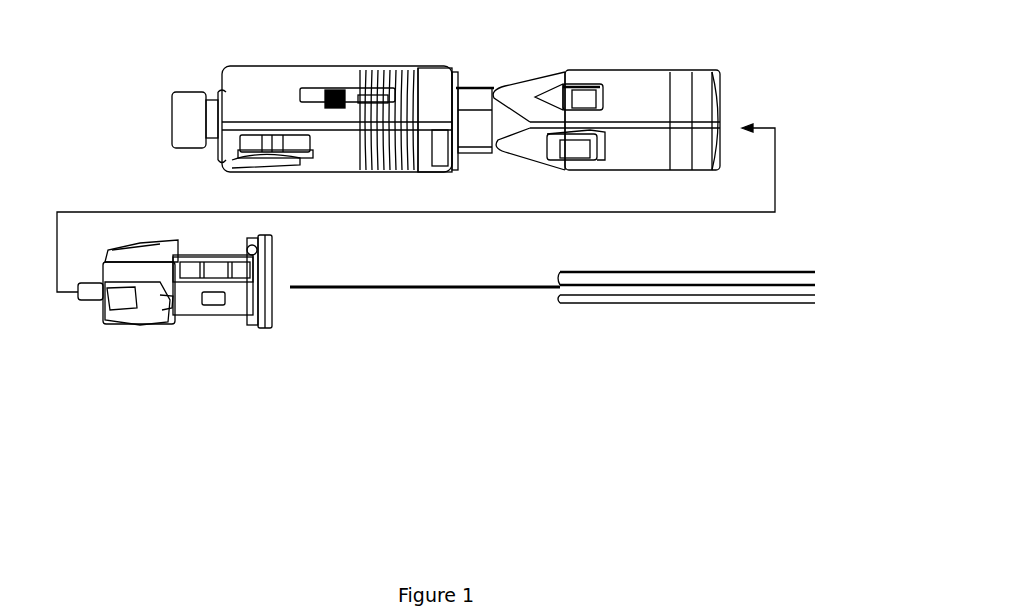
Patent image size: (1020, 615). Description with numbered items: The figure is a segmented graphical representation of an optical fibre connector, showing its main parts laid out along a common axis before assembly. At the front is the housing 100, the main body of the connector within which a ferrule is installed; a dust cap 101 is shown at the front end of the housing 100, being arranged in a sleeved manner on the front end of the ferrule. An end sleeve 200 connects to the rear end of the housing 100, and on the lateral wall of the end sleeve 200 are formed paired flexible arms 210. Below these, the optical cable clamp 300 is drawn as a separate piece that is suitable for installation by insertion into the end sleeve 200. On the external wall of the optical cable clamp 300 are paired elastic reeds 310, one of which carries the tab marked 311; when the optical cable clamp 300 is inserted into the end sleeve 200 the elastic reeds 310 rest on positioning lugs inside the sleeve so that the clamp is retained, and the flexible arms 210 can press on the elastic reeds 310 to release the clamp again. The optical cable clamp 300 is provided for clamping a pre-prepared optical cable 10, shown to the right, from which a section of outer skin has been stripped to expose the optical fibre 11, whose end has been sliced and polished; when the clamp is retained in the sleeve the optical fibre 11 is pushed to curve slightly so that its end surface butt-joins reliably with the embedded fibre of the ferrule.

The housing 100 is at (317, 82).
The dust cap 101 is at (187, 95).
The end sleeve 200 is at (637, 85).
The flexible arms 210 is at (590, 155).
The optical cable clamp 300 is at (193, 303).
The elastic reeds 310 is at (152, 308).
The latch tab 311 is at (166, 300).
The optical cable 10 is at (698, 297).
The optical fibre 11 is at (350, 288).